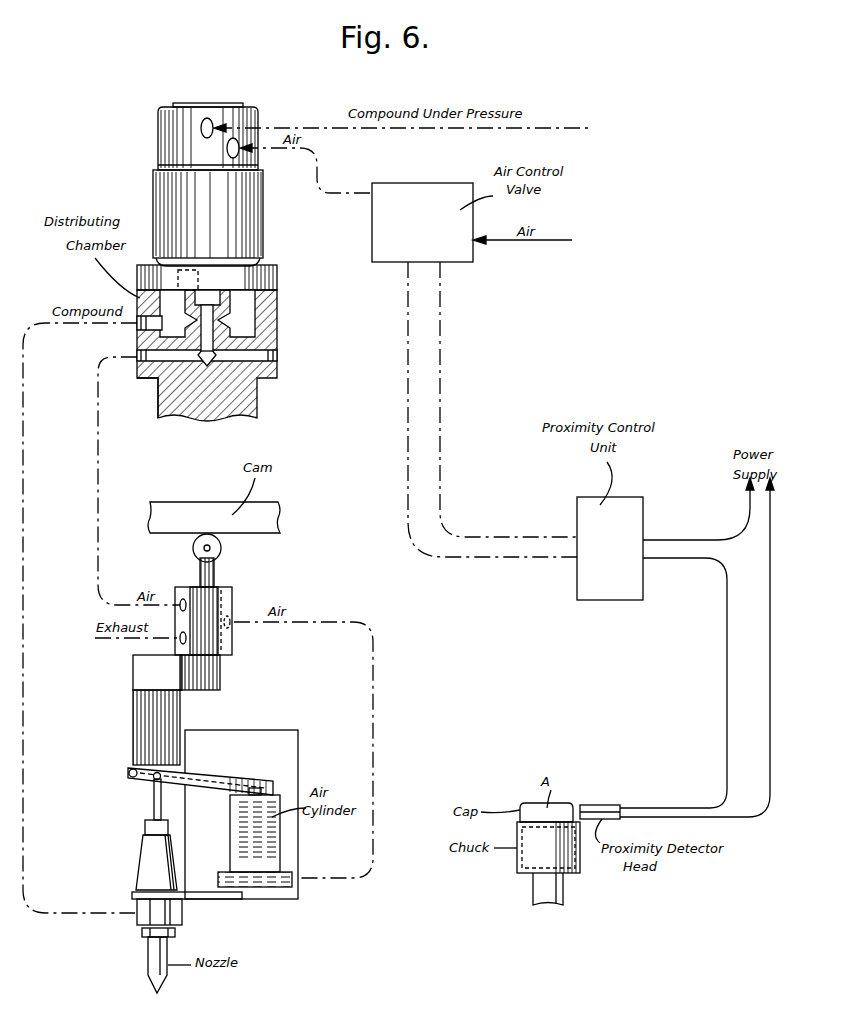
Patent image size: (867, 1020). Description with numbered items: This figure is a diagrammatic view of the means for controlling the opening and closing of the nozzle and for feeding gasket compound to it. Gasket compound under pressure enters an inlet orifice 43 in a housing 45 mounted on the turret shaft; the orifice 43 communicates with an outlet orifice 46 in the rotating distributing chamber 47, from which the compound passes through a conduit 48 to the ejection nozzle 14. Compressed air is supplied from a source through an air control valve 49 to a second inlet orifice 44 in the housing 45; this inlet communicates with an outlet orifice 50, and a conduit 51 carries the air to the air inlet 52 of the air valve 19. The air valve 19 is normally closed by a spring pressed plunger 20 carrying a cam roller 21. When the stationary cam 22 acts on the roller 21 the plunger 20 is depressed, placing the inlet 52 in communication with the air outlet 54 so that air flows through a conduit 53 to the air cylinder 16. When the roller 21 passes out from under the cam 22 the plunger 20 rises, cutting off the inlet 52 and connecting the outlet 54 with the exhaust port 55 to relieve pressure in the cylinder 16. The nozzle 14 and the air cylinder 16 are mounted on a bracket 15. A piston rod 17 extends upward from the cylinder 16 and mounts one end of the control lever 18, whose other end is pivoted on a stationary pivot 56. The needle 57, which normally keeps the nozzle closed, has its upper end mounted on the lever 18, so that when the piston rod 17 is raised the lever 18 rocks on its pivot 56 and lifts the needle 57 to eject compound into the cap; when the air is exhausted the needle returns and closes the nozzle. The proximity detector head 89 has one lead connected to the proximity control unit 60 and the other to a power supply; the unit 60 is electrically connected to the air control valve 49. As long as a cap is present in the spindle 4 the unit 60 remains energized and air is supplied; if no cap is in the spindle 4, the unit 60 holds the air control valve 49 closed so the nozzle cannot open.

The spindle 4 is at (525, 860).
The ejection nozzle 14 is at (150, 969).
The bracket 15 is at (262, 890).
The air cylinder 16 is at (270, 847).
The piston rod 17 is at (250, 794).
The lever 18 is at (233, 777).
The air valve 19 is at (232, 616).
The plunger 20 is at (215, 572).
The cam roller 21 is at (222, 549).
The stationary cam 22 is at (181, 512).
The inlet orifice 43 is at (207, 118).
The inlet orifice 44 is at (240, 156).
The housing 45 is at (258, 238).
The outlet orifice 46 is at (158, 337).
The distributing chamber 47 is at (263, 320).
The conduit 48 is at (26, 612).
The air control valve 49 is at (386, 240).
The outlet orifice 50 is at (258, 378).
The conduit 51 is at (99, 440).
The air inlet 52 is at (183, 600).
The conduit 53 is at (374, 728).
The air outlet 54 is at (236, 632).
The exhaust port 55 is at (183, 642).
The stationary pivot 56 is at (128, 774).
The needle 57 is at (154, 804).
The proximity control unit 60 is at (637, 530).
The proximity detector head 89 is at (630, 790).